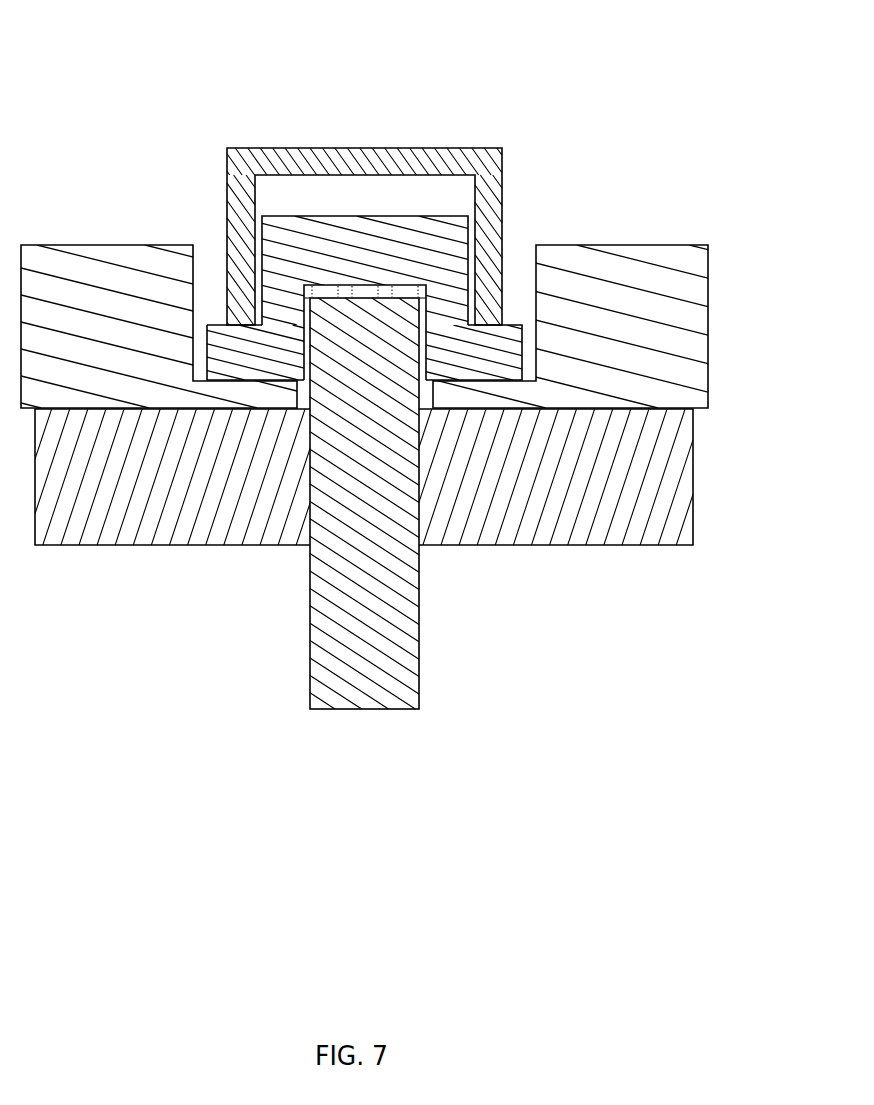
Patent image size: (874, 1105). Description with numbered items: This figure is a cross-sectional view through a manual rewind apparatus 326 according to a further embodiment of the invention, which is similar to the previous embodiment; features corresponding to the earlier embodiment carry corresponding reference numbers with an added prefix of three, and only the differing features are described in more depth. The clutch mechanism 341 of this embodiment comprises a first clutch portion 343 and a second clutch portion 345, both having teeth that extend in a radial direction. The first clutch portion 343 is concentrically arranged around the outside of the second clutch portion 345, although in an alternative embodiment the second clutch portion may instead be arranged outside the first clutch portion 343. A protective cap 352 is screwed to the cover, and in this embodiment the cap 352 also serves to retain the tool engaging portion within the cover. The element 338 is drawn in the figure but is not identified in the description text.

The manual rewind apparatus 326 is at (409, 360).
The core 338 is at (347, 222).
The clutch mechanism 341 is at (552, 346).
The first clutch portion 343 is at (427, 258).
The second clutch portion 345 is at (353, 340).
The protective cap 352 is at (250, 163).